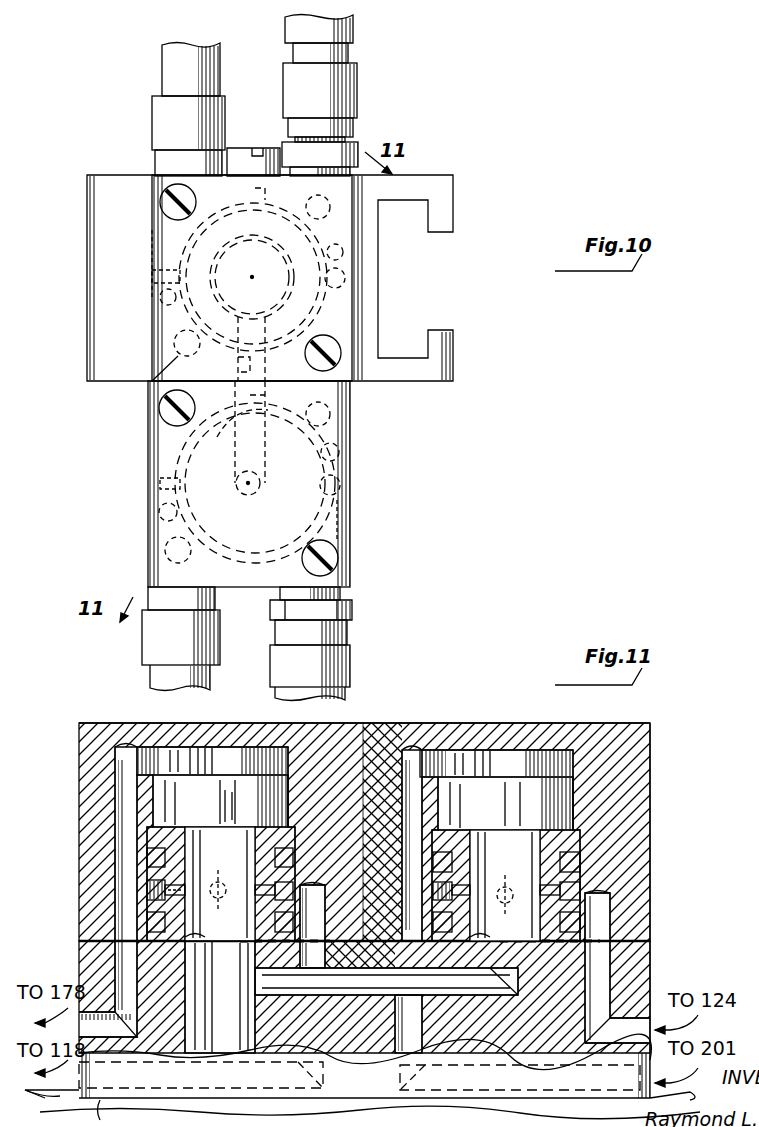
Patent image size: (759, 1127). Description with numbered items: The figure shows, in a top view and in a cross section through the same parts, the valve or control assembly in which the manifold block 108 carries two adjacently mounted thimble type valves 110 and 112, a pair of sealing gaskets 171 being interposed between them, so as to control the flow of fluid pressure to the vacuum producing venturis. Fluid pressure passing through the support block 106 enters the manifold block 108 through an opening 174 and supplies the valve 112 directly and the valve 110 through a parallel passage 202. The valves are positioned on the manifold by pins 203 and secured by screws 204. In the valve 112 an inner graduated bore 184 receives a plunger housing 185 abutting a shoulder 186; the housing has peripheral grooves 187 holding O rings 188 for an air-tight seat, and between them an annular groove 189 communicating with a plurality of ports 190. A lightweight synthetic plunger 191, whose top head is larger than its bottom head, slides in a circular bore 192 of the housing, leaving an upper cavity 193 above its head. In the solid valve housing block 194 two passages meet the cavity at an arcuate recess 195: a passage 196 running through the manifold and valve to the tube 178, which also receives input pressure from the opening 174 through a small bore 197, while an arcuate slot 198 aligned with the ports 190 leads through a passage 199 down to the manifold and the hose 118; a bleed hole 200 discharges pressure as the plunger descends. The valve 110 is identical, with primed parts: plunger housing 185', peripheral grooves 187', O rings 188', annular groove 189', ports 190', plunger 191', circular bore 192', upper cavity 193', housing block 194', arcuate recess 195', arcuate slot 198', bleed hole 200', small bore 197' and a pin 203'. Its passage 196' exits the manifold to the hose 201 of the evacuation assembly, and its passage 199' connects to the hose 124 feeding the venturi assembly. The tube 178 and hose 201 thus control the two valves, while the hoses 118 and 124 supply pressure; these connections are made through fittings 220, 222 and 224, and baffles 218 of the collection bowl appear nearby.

In FIG. 10, the support block 106 is at (87, 200).
In FIG. 11, the manifold block 108 is at (652, 975).
In FIG. 10, the valve 110 is at (146, 443).
In FIG. 11, the valve 110 is at (652, 812).
In FIG. 10, the valve 112 is at (148, 171).
In FIG. 11, the valve 112 is at (76, 765).
In FIG. 10, the hose 118 is at (172, 57).
In FIG. 10, the hose 124 is at (150, 682).
In FIG. 11, the sealing gaskets 171 is at (79, 942).
In FIG. 10, the opening 174 is at (266, 244).
In FIG. 11, the opening 174 is at (185, 978).
In FIG. 10, the tube 178 is at (348, 24).
In FIG. 11, the inner graduated bore 184 is at (290, 796).
In FIG. 11, the plunger housing 185 is at (156, 882).
In FIG. 11, the shoulder 186 is at (278, 830).
In FIG. 11, the peripheral grooves 187 is at (177, 885).
In FIG. 11, the O rings 188 is at (155, 909).
In FIG. 11, the annular groove 189 is at (101, 895).
In FIG. 11, the ports 190 is at (218, 880).
In FIG. 11, the plunger 191 is at (220, 764).
In FIG. 11, the circular bore 192 is at (196, 819).
In FIG. 11, the upper space or cavity 193 is at (240, 738).
In FIG. 10, the valve housing block 194 is at (125, 265).
In FIG. 11, the valve housing block 194 is at (339, 736).
In FIG. 10, the arcuate recess 195 is at (377, 256).
In FIG. 11, the arcuate recess 195 is at (212, 738).
In FIG. 10, the passage 196 is at (367, 214).
In FIG. 11, the passage 196 is at (77, 891).
In FIG. 11, the small bore 197 is at (205, 923).
In FIG. 10, the arcuate slot 198 is at (137, 302).
In FIG. 11, the arcuate slot 198 is at (324, 896).
In FIG. 10, the passage 199 is at (149, 342).
In FIG. 11, the passage 199 is at (334, 954).
In FIG. 10, the bleed hole 200 is at (139, 275).
In FIG. 10, the hose 201 is at (345, 695).
In FIG. 10, the parallel passage 202 is at (255, 440).
In FIG. 11, the parallel passage 202 is at (345, 997).
In FIG. 10, the pins 203 is at (376, 287).
In FIG. 10, the screws 204 is at (180, 195).
In FIG. 10, the baffles 218 is at (225, 118).
In FIG. 10, the fitting 220 is at (142, 640).
In FIG. 10, the fitting 222 is at (352, 88).
In FIG. 10, the fitting 224 is at (350, 660).
In FIG. 10, the passage 196' is at (358, 413).
In FIG. 11, the passage 196' is at (370, 843).
In FIG. 10, the arcuate recess 195' is at (365, 447).
In FIG. 11, the arcuate recess 195' is at (492, 740).
In FIG. 10, the pin 203' is at (365, 485).
In FIG. 10, the valve housing block 194' is at (373, 520).
In FIG. 11, the valve housing block 194' is at (681, 910).
In FIG. 10, the bleed hole 200' is at (130, 492).
In FIG. 10, the arcuate slot 198' is at (128, 522).
In FIG. 11, the arcuate slot 198' is at (643, 912).
In FIG. 10, the passage 199' is at (135, 556).
In FIG. 11, the passage 199' is at (643, 977).
In FIG. 11, the plunger 191' is at (505, 767).
In FIG. 11, the upper cavity 193' is at (524, 740).
In FIG. 11, the circular bore 192' is at (498, 827).
In FIG. 11, the plunger housing 185' is at (531, 870).
In FIG. 11, the O rings 188' is at (504, 865).
In FIG. 11, the annular groove 189' is at (531, 878).
In FIG. 11, the peripheral grooves 187' is at (531, 908).
In FIG. 11, the ports 190' is at (501, 884).
In FIG. 11, the small bore 197' is at (460, 951).